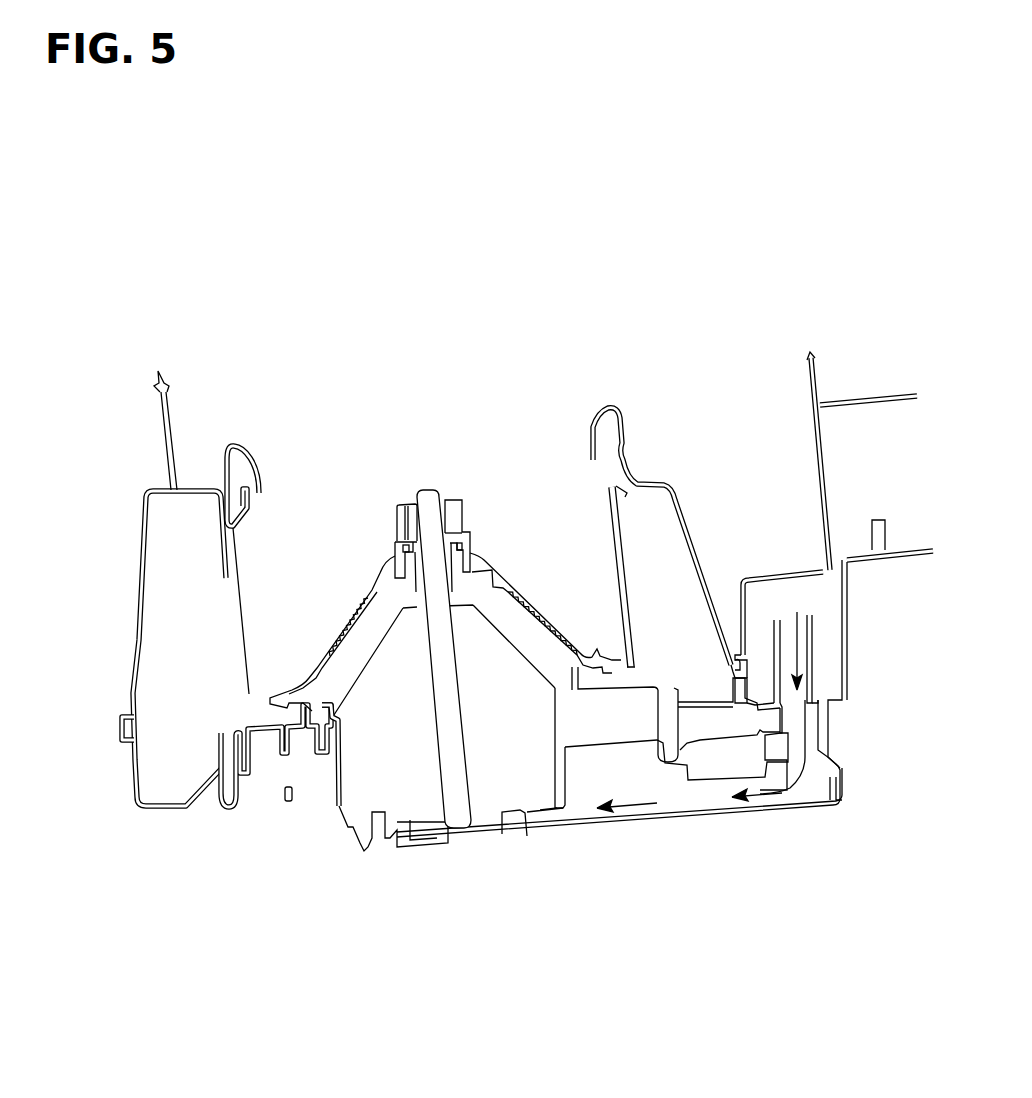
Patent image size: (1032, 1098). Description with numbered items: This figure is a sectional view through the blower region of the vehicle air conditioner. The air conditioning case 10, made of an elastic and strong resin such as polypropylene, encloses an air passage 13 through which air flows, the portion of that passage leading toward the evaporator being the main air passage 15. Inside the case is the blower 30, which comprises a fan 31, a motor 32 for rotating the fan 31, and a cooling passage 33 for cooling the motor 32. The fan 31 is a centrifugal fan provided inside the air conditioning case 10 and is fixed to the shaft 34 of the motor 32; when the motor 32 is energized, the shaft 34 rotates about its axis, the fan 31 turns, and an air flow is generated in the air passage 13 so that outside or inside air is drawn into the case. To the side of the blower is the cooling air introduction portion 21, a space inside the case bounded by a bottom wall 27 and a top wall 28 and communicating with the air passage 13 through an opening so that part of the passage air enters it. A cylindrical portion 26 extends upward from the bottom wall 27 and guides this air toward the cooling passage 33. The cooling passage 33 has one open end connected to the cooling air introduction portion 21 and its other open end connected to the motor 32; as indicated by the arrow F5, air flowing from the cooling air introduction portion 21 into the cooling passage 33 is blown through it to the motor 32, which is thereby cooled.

The air conditioning case 10 is at (137, 588).
The air passage 13 is at (120, 648).
The main air passage 15 is at (175, 640).
The cooling air introduction portion 21 is at (834, 578).
The cylindrical portion 26 is at (815, 637).
The bottom wall 27 is at (829, 692).
The top wall 28 is at (795, 580).
The blower 30 is at (381, 522).
The fan 31 is at (613, 548).
The motor 32 is at (521, 814).
The cooling passage 33 is at (680, 800).
The shaft 34 is at (439, 748).
The arrow F5 is at (629, 807).